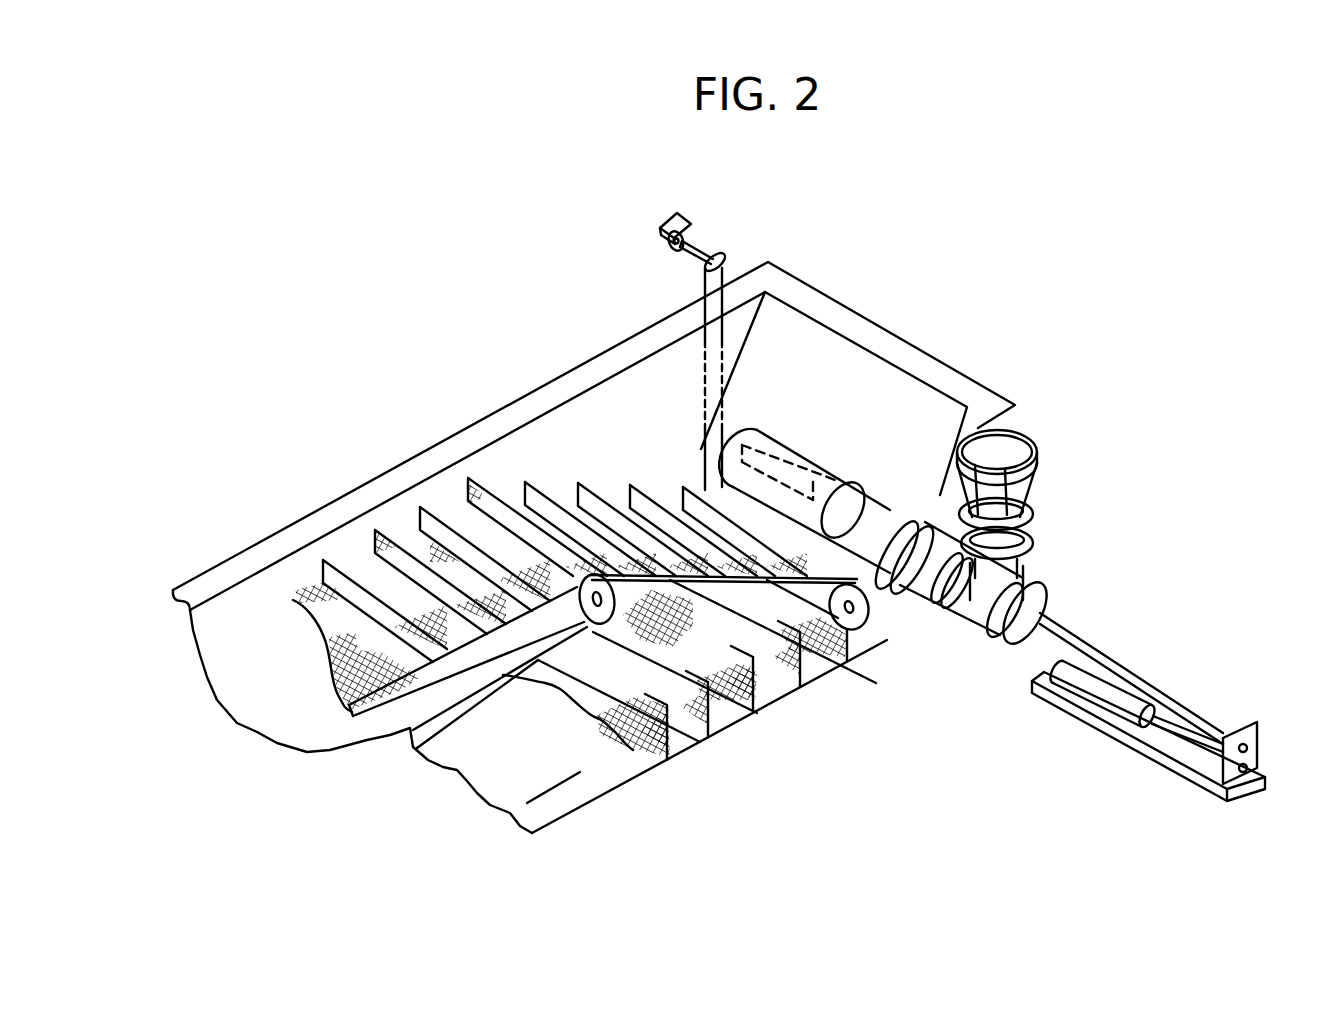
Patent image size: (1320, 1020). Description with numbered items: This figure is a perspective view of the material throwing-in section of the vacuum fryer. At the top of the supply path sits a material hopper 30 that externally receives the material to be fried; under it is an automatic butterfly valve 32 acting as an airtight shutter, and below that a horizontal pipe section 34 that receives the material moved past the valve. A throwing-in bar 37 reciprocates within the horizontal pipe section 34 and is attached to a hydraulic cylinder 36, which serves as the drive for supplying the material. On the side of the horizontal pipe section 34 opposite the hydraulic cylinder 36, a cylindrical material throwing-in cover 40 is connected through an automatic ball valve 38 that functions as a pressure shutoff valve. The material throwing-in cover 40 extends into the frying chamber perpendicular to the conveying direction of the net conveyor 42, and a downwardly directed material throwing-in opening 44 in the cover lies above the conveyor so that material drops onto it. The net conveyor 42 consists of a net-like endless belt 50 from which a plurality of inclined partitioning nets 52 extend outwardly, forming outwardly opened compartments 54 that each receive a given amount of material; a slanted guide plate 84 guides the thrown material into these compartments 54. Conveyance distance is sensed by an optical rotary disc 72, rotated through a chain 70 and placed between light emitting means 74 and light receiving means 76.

The material hopper 30 is at (1050, 460).
The automatic butterfly valve 32 is at (1035, 527).
The horizontal pipe section 34 is at (970, 613).
The hydraulic cylinder 36 is at (1112, 690).
The throwing-in bar 37 is at (1143, 677).
The automatic ball valve 38 is at (920, 593).
The material throwing-in cover 40 is at (787, 447).
The net conveyor 42 is at (693, 733).
The material throwing-in opening 44 is at (720, 427).
The net-like endless belt 50 is at (740, 693).
The partitioning nets 52 is at (787, 658).
The compartments 54 is at (572, 490).
The chain 70 is at (702, 290).
The optical rotary disc 72 is at (665, 247).
The light emitting means 74 is at (663, 218).
The light receiving means 76 is at (690, 228).
The slanted guide plate 84 is at (818, 338).